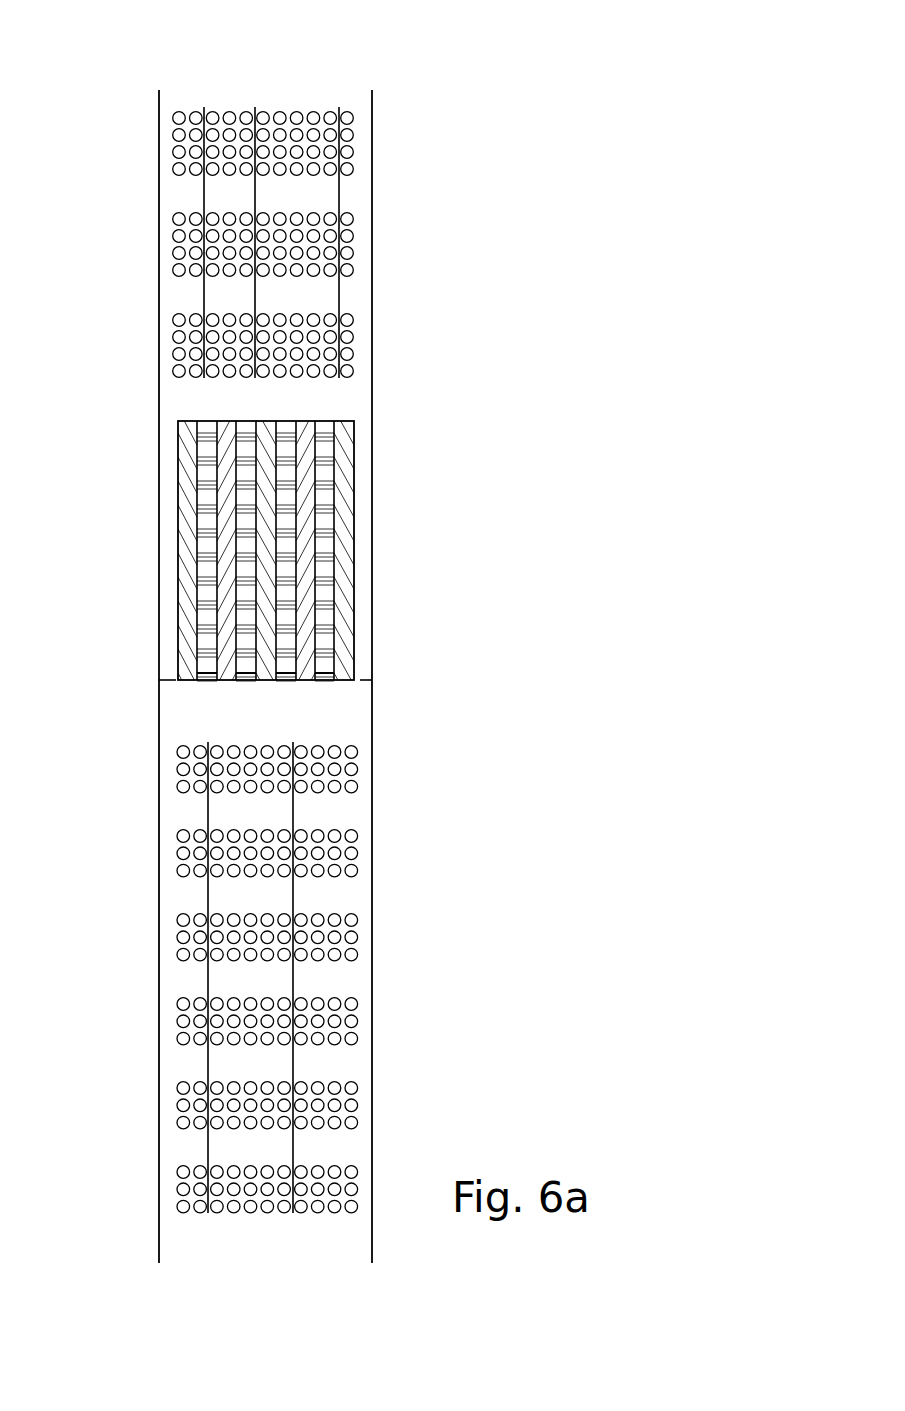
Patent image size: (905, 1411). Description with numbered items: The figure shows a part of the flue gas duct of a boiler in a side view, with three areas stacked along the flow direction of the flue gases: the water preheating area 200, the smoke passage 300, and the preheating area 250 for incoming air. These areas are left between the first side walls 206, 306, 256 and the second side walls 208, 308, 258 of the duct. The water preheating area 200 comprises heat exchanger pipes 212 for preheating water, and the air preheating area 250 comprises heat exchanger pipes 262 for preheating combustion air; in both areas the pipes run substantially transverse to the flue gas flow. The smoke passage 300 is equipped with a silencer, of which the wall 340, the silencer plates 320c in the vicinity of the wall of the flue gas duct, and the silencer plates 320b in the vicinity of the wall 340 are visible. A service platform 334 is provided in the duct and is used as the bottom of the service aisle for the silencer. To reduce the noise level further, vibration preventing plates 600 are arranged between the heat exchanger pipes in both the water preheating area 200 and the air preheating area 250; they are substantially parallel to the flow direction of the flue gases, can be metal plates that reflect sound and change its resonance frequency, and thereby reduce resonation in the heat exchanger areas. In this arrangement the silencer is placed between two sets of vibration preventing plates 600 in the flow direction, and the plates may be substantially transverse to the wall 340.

The water preheating area 200 is at (339, 385).
The first side wall 206 is at (128, 217).
The second side wall 208 is at (397, 218).
The heat exchanger pipes 212 is at (347, 136).
The vibration preventing plate 600 is at (339, 107).
The smoke passage 300 is at (329, 539).
The first side wall 306 is at (115, 590).
The second side wall 308 is at (405, 590).
The silencer plates 320b is at (268, 428).
The silencer plates 320c is at (229, 458).
The wall 340 is at (325, 487).
The service platform 334 is at (363, 680).
The preheating area for incoming air 250 is at (337, 981).
The first side wall 256 is at (128, 950).
The second side wall 258 is at (405, 950).
The heat exchanger pipes 262 is at (351, 752).